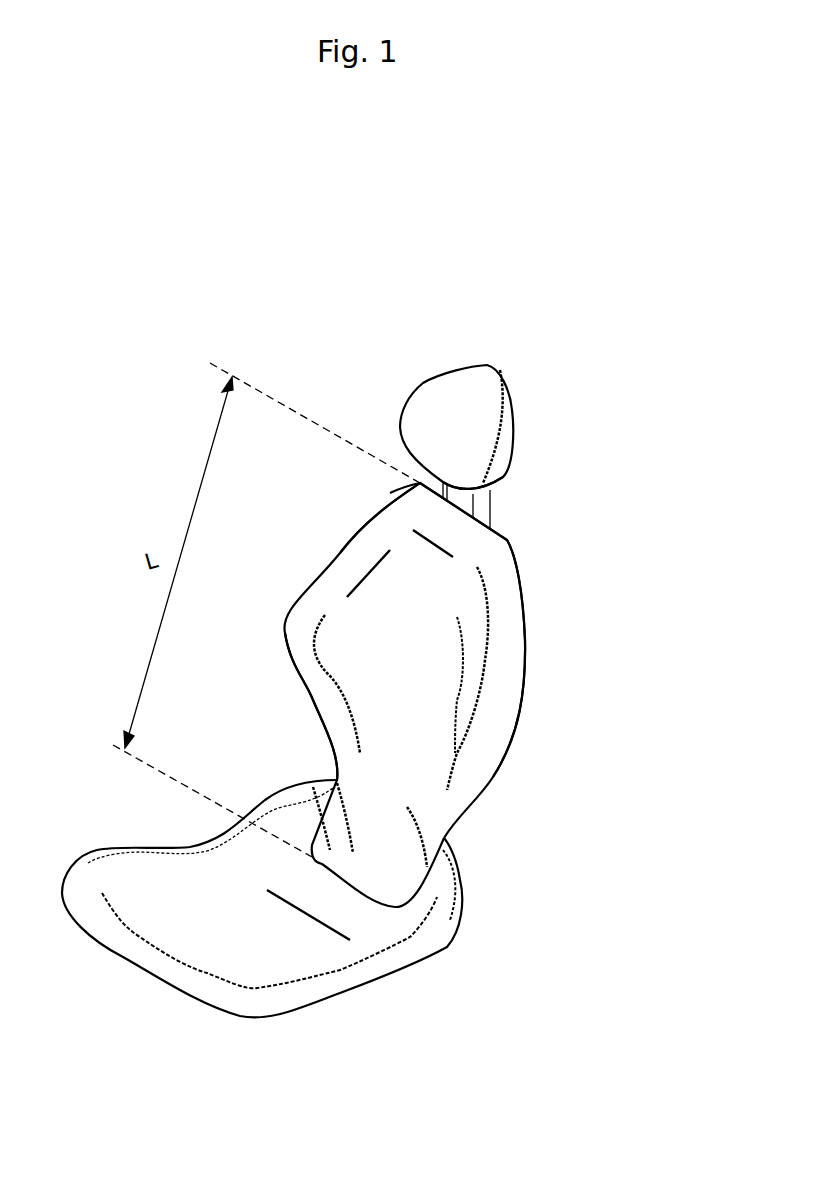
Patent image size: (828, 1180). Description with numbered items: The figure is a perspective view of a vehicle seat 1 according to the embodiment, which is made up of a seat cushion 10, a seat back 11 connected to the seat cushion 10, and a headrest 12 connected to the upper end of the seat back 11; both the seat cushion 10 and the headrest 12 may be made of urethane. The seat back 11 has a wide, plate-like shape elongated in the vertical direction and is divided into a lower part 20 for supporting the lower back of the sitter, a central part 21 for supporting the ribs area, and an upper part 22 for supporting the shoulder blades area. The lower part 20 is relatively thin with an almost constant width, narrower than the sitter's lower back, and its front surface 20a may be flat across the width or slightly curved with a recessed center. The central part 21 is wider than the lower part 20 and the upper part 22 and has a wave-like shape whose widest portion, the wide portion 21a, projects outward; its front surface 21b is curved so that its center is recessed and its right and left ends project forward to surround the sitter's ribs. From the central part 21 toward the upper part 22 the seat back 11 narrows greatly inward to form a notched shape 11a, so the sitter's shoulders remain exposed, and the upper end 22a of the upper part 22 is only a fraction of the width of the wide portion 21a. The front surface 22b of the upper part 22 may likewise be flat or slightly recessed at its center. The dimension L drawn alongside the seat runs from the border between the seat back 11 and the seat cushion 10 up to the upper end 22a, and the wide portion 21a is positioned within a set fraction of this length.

The vehicle seat 1 is at (443, 332).
The seat cushion 10 is at (154, 848).
The seat back 11 is at (511, 528).
The notched shape 11a is at (340, 550).
The headrest 12 is at (483, 365).
The lower part 20 is at (433, 840).
The front surface of the lower part 20a is at (385, 807).
The central part 21 is at (497, 712).
The wide portion 21a is at (283, 633).
The front surface of the central part 21b is at (417, 662).
The upper part 22 is at (497, 588).
The upper end of the upper part 22a is at (445, 513).
The front surface of the upper part 22b is at (443, 573).